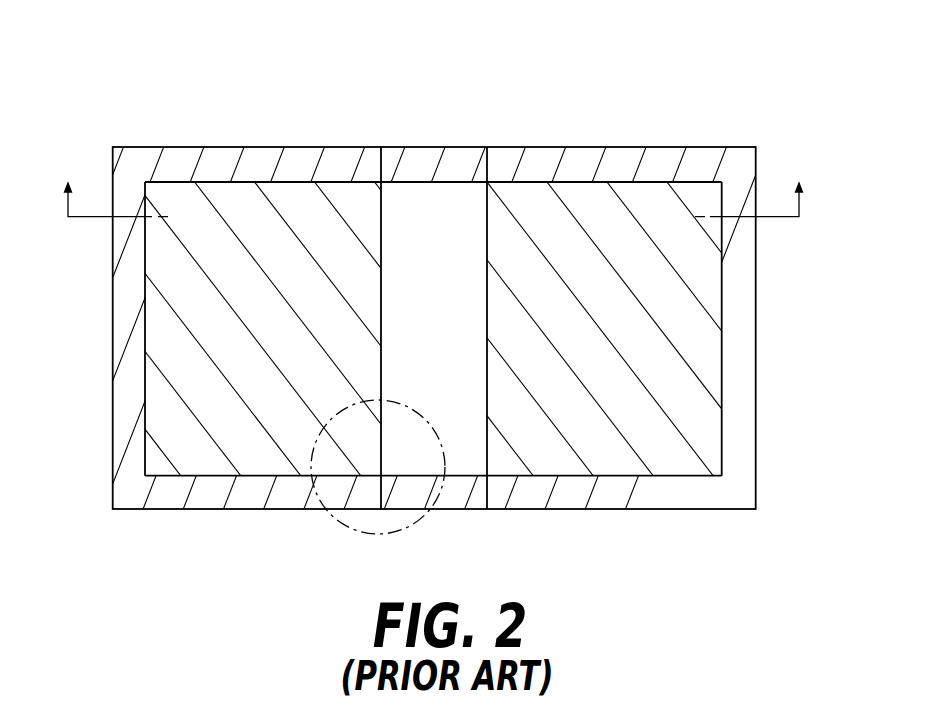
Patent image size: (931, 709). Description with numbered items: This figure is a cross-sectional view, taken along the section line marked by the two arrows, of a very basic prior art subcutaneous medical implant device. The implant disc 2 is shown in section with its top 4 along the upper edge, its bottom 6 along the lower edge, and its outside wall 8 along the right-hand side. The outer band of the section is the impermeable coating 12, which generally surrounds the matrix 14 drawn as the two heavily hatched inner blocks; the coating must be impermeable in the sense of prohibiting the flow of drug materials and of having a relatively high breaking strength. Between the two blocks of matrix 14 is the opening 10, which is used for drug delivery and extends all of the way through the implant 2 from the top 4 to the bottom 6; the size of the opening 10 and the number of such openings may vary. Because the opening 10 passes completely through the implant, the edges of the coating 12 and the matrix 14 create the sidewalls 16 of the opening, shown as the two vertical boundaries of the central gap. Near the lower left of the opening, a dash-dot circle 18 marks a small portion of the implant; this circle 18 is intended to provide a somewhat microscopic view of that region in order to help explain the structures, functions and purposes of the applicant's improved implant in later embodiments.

The implant disc 2 is at (645, 126).
The top 4 is at (253, 146).
The bottom 6 is at (588, 512).
The outside wall 8 is at (758, 292).
The opening 10 is at (452, 513).
The impermeable coating 12 is at (143, 381).
The matrix 14 is at (231, 322).
The sidewalls 16 is at (394, 213).
The circle 18 is at (352, 518).